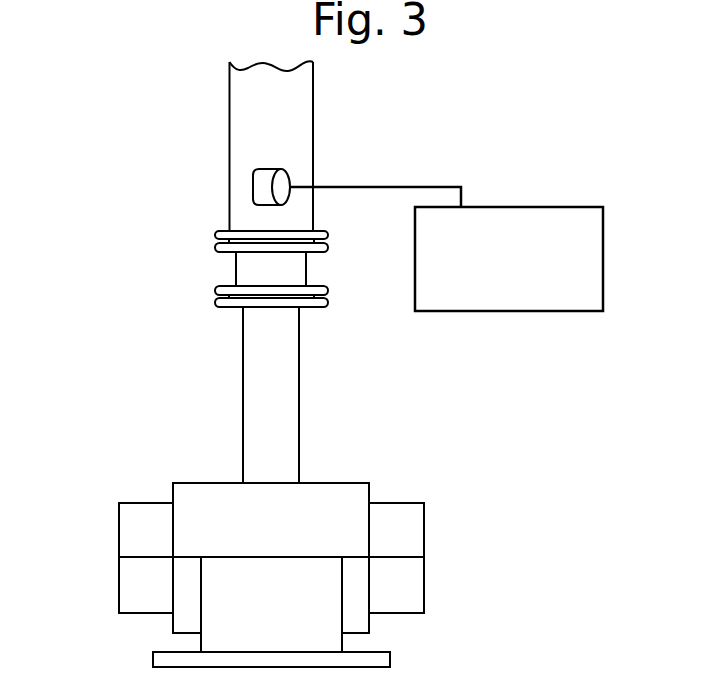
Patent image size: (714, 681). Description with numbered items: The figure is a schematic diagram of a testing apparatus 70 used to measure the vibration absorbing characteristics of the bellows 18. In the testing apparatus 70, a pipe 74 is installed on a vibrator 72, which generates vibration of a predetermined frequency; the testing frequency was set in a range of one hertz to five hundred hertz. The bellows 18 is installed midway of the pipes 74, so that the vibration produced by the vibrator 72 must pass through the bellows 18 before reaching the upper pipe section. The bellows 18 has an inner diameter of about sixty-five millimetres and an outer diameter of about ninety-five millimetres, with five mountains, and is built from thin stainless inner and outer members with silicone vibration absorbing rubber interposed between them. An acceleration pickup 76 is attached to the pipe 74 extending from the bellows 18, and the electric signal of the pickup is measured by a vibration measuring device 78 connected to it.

The testing apparatus 70 is at (117, 466).
The vibrator 72 is at (370, 483).
The pipe 74 is at (303, 93).
The acceleration pickup 76 is at (262, 190).
The vibration measuring device 78 is at (582, 207).
The bellows 18 is at (291, 266).